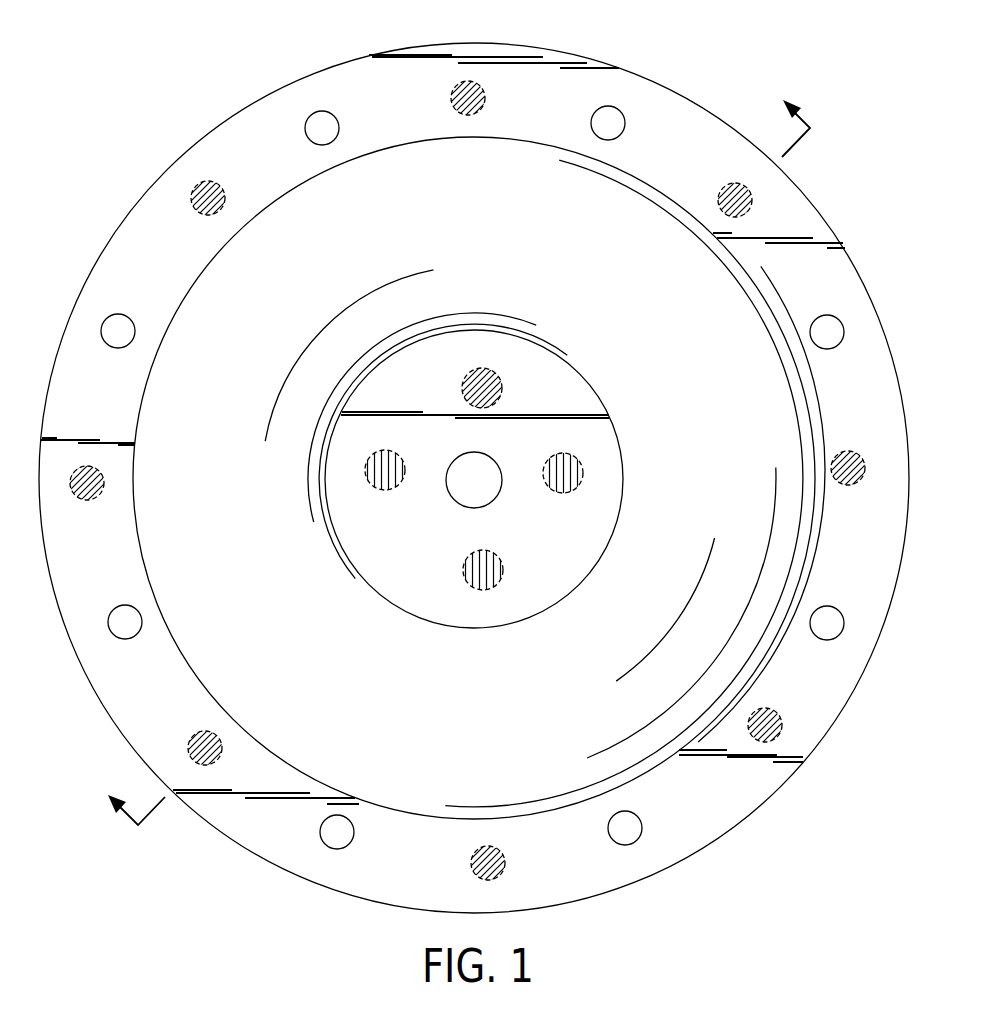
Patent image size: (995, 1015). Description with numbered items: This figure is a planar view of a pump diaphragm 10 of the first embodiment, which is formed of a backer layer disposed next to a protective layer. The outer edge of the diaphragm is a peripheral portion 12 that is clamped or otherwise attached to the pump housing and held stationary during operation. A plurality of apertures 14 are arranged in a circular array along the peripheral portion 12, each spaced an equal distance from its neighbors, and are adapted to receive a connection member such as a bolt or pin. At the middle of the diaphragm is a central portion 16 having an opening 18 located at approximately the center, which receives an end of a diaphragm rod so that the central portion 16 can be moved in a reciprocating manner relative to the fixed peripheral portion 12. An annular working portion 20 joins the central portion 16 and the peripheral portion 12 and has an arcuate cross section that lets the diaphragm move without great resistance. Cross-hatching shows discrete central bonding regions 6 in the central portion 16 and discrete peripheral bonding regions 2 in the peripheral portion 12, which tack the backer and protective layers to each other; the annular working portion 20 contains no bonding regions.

The pump diaphragm 10 is at (145, 110).
The peripheral portion 12 is at (548, 85).
The apertures 14 is at (308, 131).
The peripheral bonding regions 2 is at (82, 462).
The annular working portion 20 is at (617, 243).
The central portion 16 is at (427, 587).
The opening 18 is at (450, 472).
The central bonding regions 6 is at (582, 458).